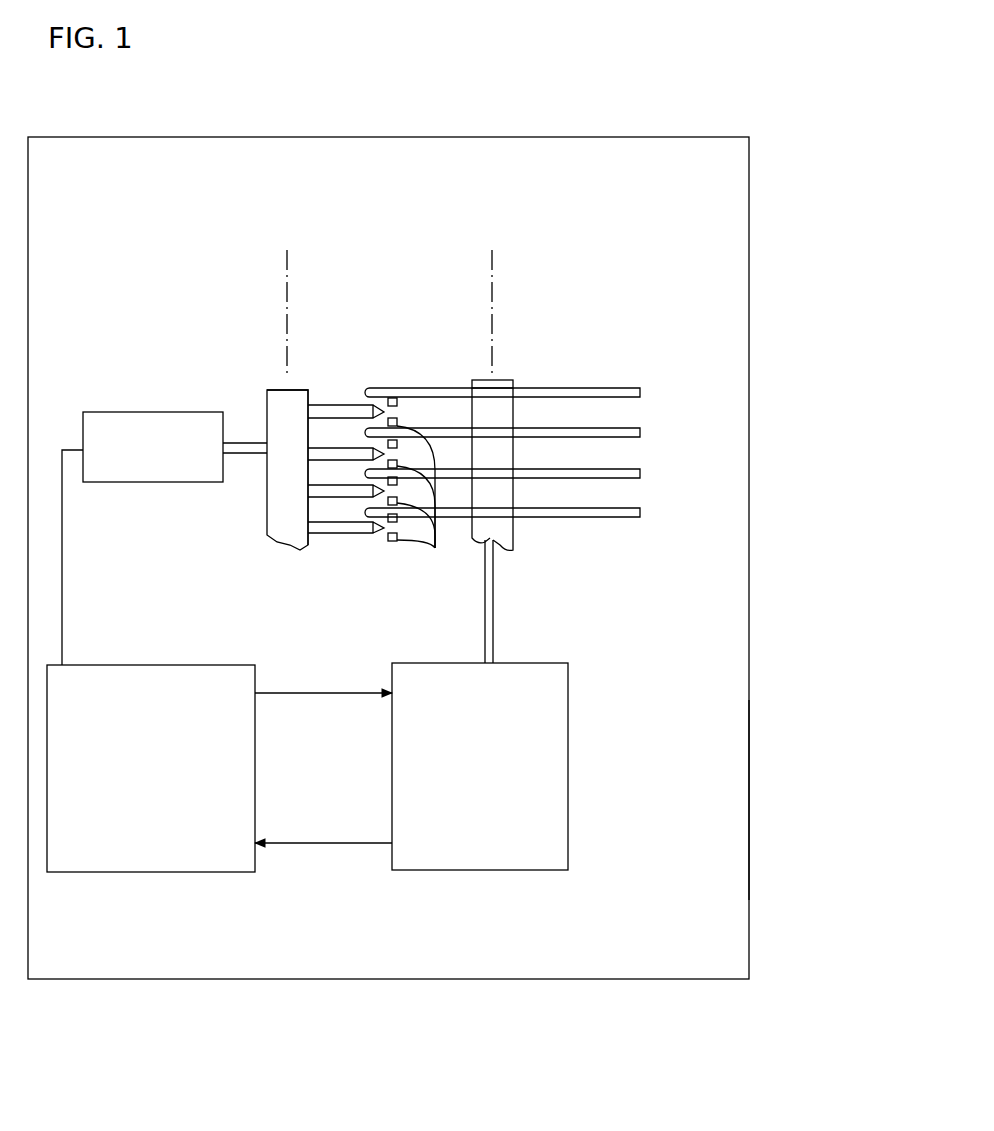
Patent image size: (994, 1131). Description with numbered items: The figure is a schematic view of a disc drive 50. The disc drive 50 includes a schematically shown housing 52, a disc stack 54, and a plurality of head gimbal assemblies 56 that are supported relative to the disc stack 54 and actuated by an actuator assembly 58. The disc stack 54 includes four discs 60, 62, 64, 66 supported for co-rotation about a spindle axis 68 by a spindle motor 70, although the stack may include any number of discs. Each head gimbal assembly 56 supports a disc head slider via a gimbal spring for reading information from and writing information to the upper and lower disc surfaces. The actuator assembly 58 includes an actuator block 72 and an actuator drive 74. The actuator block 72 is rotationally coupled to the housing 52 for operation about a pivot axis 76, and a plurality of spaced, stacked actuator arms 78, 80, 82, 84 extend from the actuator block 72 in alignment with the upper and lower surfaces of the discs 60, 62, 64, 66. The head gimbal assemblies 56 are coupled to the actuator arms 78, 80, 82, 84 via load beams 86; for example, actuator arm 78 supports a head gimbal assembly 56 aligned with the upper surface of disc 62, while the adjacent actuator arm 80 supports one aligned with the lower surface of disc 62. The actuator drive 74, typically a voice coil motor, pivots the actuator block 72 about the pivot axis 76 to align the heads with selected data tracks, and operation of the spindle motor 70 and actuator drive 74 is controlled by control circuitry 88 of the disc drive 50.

The disc drive 50 is at (803, 178).
The housing 52 is at (752, 790).
The disc stack 54 is at (603, 360).
The head gimbal assemblies 56 is at (383, 420).
The actuator assembly 58 is at (328, 362).
The disc 60 is at (640, 388).
The disc 62 is at (640, 430).
The disc 64 is at (640, 470).
The disc 66 is at (640, 510).
The spindle axis 68 is at (493, 277).
The spindle motor 70 is at (572, 778).
The actuator block 72 is at (300, 472).
The actuator drive 74 is at (173, 412).
The pivot axis 76 is at (287, 336).
The actuator arm 78 is at (322, 404).
The actuator arm 80 is at (320, 450).
The actuator arm 82 is at (321, 488).
The actuator arm 84 is at (322, 526).
The load beams 86 is at (390, 420).
The control circuitry 88 is at (175, 665).